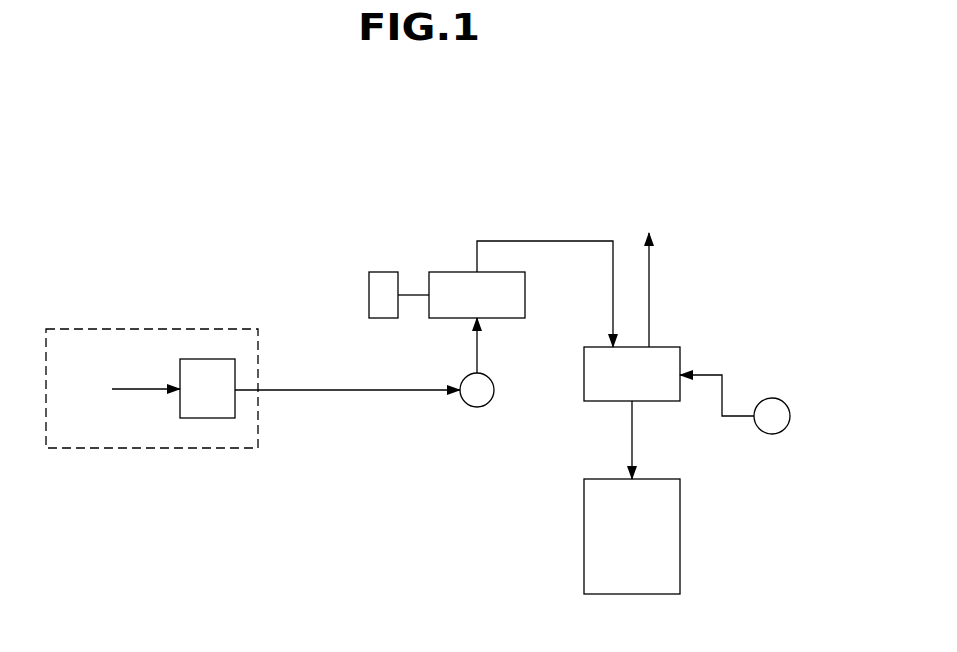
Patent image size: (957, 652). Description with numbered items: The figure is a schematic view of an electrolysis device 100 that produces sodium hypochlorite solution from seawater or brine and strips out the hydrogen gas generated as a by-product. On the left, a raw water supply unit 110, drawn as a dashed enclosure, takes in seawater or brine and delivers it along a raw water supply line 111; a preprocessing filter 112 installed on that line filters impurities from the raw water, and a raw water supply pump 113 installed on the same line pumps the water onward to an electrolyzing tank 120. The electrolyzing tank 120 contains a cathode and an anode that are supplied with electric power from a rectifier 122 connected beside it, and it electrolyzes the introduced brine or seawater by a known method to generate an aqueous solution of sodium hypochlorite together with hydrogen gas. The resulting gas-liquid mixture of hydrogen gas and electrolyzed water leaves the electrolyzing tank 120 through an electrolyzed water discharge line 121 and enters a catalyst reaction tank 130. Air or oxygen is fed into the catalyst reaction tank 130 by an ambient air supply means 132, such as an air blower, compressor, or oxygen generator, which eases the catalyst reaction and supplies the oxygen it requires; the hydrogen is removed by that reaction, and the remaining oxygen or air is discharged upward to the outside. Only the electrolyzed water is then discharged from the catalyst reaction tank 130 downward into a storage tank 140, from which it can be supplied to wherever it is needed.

The electrolysis device 100 is at (325, 254).
The raw water supply unit 110 is at (143, 329).
The raw water supply line 111 is at (325, 389).
The preprocessing filter 112 is at (212, 359).
The raw water supply pump 113 is at (494, 391).
The electrolyzing tank 120 is at (525, 296).
The electrolyzed water discharge line 121 is at (538, 241).
The rectifier 122 is at (385, 272).
The catalyst reaction tank 130 is at (665, 347).
The ambient air supply means 132 is at (778, 398).
The storage tank 140 is at (680, 523).